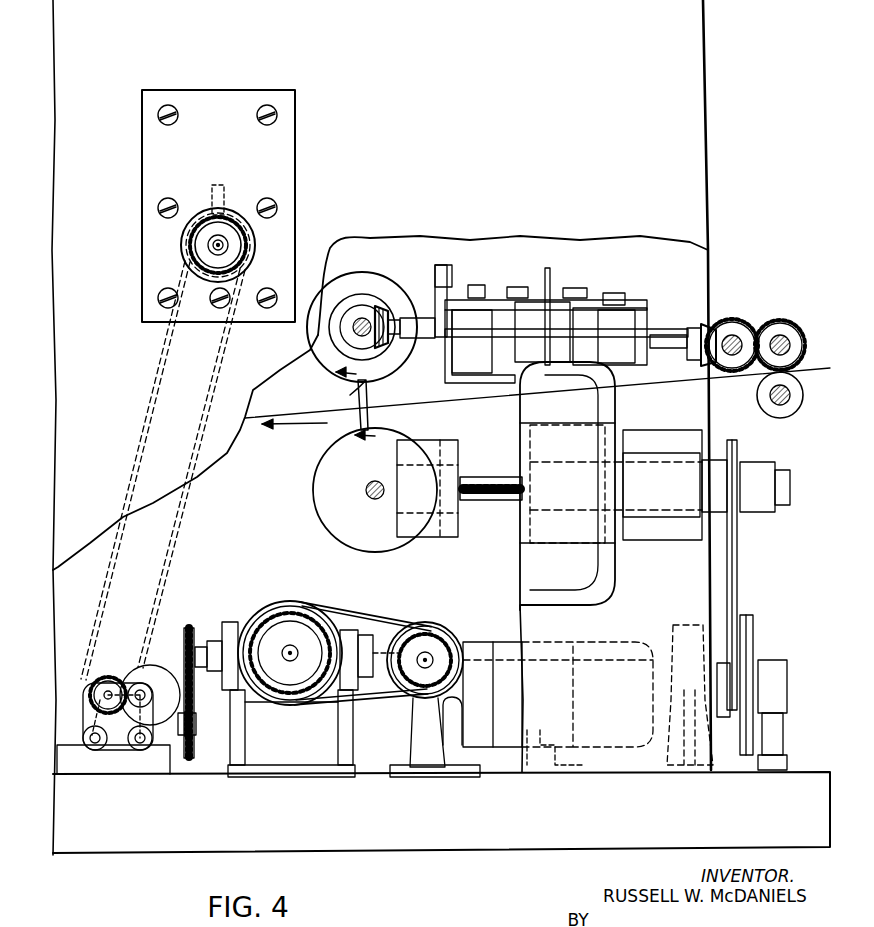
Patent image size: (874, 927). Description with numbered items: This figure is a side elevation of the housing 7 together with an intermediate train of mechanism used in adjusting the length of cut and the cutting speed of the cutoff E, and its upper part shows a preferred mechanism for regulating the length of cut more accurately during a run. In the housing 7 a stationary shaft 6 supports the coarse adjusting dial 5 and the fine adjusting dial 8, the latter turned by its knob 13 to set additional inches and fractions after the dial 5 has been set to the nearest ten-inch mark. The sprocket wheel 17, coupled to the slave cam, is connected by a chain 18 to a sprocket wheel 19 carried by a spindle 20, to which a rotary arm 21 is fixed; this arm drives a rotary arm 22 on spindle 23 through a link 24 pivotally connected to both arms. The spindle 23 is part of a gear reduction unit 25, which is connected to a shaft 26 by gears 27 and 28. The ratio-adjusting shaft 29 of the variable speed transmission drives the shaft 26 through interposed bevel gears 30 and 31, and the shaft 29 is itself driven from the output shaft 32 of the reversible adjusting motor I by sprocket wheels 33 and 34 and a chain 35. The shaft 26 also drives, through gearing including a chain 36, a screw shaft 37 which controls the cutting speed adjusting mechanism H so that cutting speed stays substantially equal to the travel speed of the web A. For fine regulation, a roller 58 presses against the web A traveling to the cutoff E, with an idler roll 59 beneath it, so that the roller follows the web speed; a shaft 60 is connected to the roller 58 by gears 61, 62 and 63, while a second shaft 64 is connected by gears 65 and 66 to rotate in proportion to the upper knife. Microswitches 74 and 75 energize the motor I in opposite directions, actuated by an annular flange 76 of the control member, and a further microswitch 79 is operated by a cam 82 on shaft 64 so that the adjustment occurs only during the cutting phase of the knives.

The coarse adjusting dial 5 is at (238, 218).
The stationary shaft 6 is at (228, 250).
The housing 7 is at (290, 148).
The fine adjusting dial 8 is at (242, 241).
The knob 13 is at (205, 243).
The sprocket wheel 17 is at (212, 276).
The chain 18 is at (178, 528).
The sprocket wheel 19 is at (108, 675).
The spindle 20 is at (100, 694).
The rotary arm 21 is at (85, 711).
The rotary arm 22 is at (148, 752).
The spindle 23 is at (146, 688).
The link 24 is at (118, 750).
The gear reduction unit 25 is at (158, 662).
The shaft 26 is at (478, 640).
The gear 27 is at (195, 738).
The gear 28 is at (187, 628).
The ratio-adjusting shaft 29 is at (292, 645).
The bevel gear 30 is at (292, 688).
The bevel gear 31 is at (272, 622).
The output shaft 32 is at (428, 652).
The sprocket wheel 33 is at (407, 632).
The sprocket wheel 34 is at (318, 612).
The chain 35 is at (365, 612).
The chain 36 is at (740, 592).
The screw shaft 37 is at (492, 500).
The roller 58 is at (795, 338).
The idler roll 59 is at (797, 400).
The shaft 60 is at (660, 333).
The gear 61 is at (780, 320).
The gear 62 is at (735, 320).
The gear 63 is at (714, 320).
The second shaft 64 is at (362, 327).
The gear 65 is at (383, 308).
The gear 66 is at (340, 337).
The microswitch 74 is at (613, 293).
The microswitch 75 is at (485, 287).
The annular flange 76 is at (548, 284).
The microswitch 79 is at (448, 272).
The cam 82 is at (436, 290).
The web A is at (470, 400).
The cutoff E is at (356, 404).
The cutting speed adjusting mechanism H is at (608, 588).
The adjusting motor I is at (512, 735).